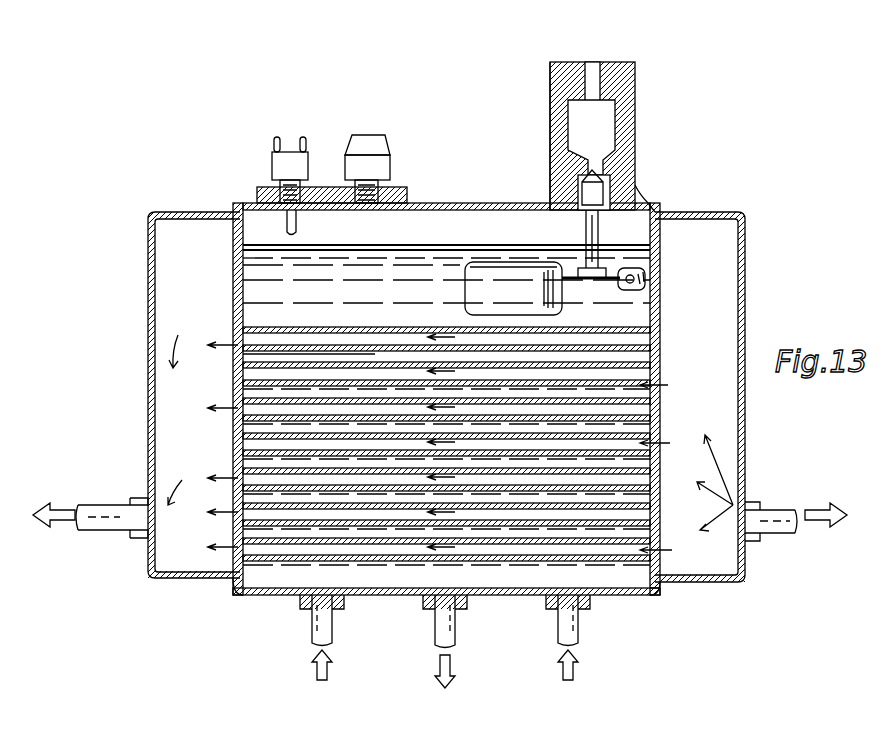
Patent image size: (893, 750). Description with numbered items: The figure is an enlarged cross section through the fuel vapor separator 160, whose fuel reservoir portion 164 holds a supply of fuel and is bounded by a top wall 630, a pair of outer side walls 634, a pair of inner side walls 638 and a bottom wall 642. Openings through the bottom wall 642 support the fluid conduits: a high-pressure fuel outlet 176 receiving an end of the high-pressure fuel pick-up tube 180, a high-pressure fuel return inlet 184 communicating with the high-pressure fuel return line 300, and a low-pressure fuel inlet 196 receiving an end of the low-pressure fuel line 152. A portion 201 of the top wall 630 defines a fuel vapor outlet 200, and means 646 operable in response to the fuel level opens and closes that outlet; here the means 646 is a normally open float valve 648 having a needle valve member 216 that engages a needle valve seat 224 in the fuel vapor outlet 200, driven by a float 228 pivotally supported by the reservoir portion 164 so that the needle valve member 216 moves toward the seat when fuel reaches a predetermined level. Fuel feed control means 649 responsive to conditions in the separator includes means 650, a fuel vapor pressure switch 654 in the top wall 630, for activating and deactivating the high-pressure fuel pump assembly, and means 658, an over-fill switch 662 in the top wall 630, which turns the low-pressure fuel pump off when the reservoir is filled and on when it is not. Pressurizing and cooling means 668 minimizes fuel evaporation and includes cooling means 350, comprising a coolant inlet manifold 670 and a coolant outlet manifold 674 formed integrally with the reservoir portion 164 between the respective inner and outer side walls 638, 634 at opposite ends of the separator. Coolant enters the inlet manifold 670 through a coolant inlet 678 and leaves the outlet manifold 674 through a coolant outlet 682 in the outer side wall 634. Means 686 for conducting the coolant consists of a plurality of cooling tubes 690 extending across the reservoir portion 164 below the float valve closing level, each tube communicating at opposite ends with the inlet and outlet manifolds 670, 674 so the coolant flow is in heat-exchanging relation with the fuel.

The fuel vapor outlet 200 is at (590, 62).
The portion of the top wall 201 is at (633, 80).
The needle valve seat 224 is at (606, 182).
The fuel vapor separator 160 is at (744, 201).
The top wall 630 is at (493, 193).
The fuel feed control means 649 is at (426, 193).
The means responsive to fuel vapor pressure 650 is at (386, 126).
The fuel vapor pressure switch 654 is at (392, 165).
The means responsive to fuel level 658 is at (293, 126).
The over-fill switch 662 is at (272, 163).
The outer side walls 634 is at (150, 242).
The needle valve member 216 is at (652, 250).
The inner side walls 638 is at (240, 283).
The coolant outlet manifold 674 is at (212, 316).
The coolant inlet manifold 670 is at (718, 336).
The means for conducting a flow of coolant 686 is at (380, 345).
The float 228 is at (535, 296).
The float valve 648 is at (593, 292).
The means for opening and closing the fuel vapor outlet 646 is at (568, 231).
The fuel reservoir portion 164 is at (262, 412).
The cooling tubes 690 is at (238, 345).
The pressurizing and cooling means 668 is at (760, 431).
The coolant inlet 678 is at (765, 512).
The coolant outlet 682 is at (130, 525).
The fuel vapor separator cooling means 350 is at (280, 559).
The low-pressure fuel line 152 is at (312, 623).
The high-pressure fuel pick-up tube 180 is at (435, 628).
The high-pressure fuel return line 300 is at (558, 628).
The low-pressure fuel inlet 196 is at (330, 593).
The high-pressure fuel outlet 176 is at (450, 593).
The high-pressure fuel return inlet 184 is at (568, 593).
The bottom wall 642 is at (680, 598).